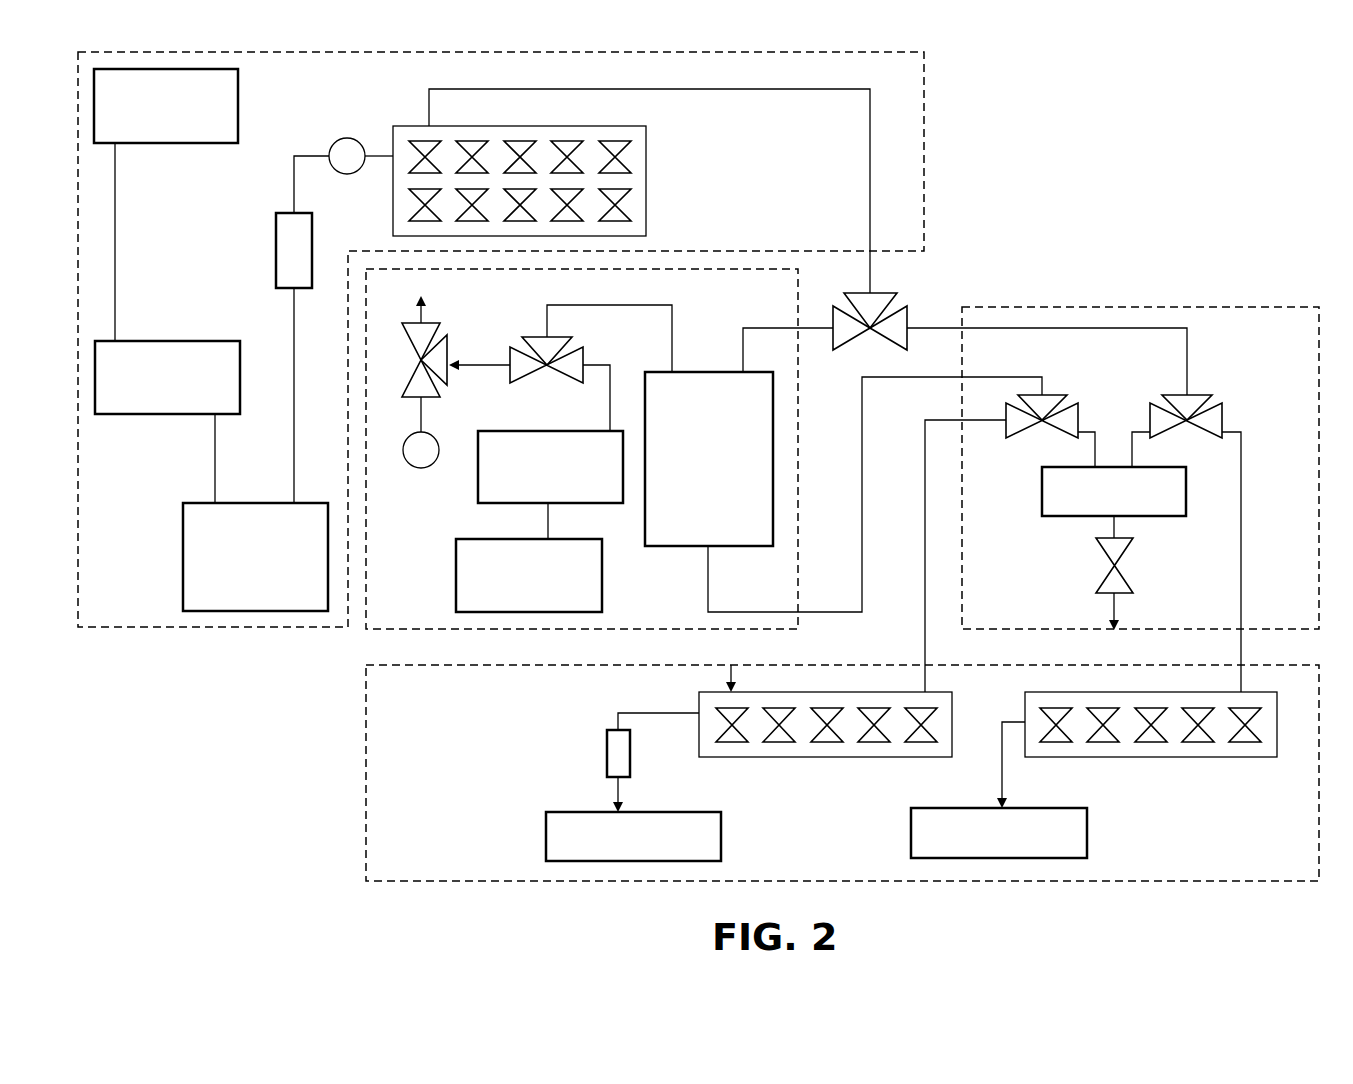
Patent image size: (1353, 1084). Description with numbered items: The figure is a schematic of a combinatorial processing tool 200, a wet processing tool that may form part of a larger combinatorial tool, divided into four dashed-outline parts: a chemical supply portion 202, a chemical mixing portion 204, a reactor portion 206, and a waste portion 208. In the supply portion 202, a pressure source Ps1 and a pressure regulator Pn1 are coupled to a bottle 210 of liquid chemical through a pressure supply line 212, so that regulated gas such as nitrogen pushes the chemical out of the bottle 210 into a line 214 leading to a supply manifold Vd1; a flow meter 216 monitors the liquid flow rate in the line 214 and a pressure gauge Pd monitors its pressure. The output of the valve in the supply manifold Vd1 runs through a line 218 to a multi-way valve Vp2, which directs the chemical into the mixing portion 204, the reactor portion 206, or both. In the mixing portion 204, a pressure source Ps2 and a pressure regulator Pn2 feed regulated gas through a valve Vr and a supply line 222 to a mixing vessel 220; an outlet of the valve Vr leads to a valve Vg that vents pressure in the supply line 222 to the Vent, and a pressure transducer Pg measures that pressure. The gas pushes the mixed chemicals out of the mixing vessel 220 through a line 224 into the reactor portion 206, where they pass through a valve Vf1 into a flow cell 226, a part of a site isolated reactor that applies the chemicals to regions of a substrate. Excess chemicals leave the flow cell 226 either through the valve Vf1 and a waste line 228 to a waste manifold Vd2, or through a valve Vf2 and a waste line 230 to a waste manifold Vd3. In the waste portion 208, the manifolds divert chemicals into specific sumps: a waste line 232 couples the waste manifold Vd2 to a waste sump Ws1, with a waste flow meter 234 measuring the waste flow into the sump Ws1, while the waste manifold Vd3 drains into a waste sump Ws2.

The combinatorial processing tool 200 is at (1313, 125).
The chemical supply portion 202 is at (924, 135).
The chemical mixing portion 204 is at (366, 629).
The reactor portion 206 is at (1125, 307).
The waste portion 208 is at (366, 803).
The bottle 210 is at (183, 567).
The pressure supply line 212 is at (115, 209).
The line 214 is at (300, 157).
The flow meter 216 is at (276, 272).
The line 218 is at (598, 89).
The mixing vessel 220 is at (687, 546).
The supply line 222 is at (610, 305).
The line 224 is at (722, 612).
The flow cell 226 is at (1042, 491).
The waste line 228 is at (925, 520).
The waste line 230 is at (1241, 545).
The waste line 232 is at (630, 713).
The waste flow meter 234 is at (630, 742).
The pressure source Ps1 is at (212, 143).
The pressure transducer Pd is at (360, 170).
The supply manifold Vd1 is at (646, 160).
The pressure regulator Pn1 is at (160, 414).
The vent Vent is at (398, 310).
The valve Vg is at (440, 340).
The pressure transducer Pg is at (412, 466).
The valve Vr is at (572, 347).
The pressure regulator Pn2 is at (478, 485).
The pressure source Ps2 is at (456, 585).
The valve Vp2 is at (898, 308).
The valve Vf1 is at (1075, 398).
The valve Vf2 is at (1220, 396).
The waste manifold Vd2 is at (810, 757).
The waste manifold Vd3 is at (1200, 757).
The waste sump Ws1 is at (721, 828).
The waste sump Ws2 is at (1087, 836).